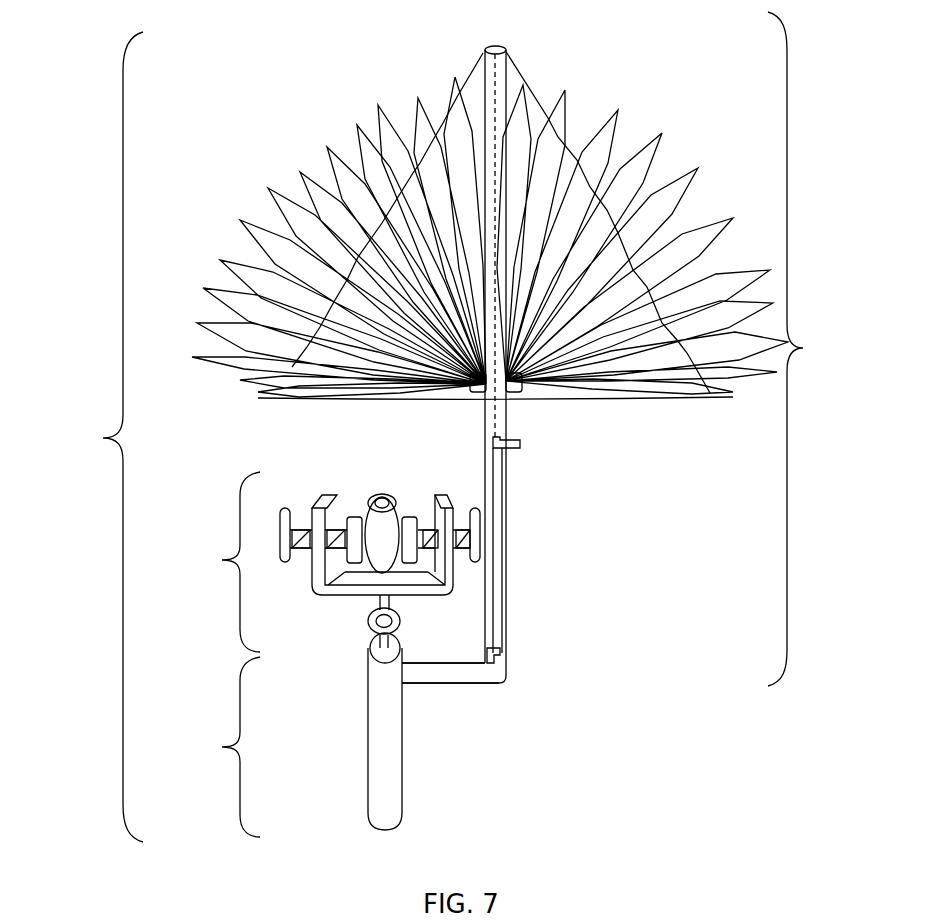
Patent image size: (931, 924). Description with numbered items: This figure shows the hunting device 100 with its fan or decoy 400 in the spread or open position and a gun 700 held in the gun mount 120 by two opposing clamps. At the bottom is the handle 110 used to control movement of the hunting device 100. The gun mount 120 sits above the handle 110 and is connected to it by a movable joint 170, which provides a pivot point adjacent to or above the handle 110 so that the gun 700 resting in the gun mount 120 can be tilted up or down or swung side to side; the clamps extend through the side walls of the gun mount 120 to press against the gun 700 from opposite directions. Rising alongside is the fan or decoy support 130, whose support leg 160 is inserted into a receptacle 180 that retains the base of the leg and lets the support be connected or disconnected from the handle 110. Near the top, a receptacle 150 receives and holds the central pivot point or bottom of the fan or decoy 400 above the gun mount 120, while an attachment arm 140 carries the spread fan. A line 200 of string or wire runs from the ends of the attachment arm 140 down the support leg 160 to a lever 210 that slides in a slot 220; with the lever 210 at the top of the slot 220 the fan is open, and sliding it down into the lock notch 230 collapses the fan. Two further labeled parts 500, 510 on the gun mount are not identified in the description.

The hunting device 100 is at (89, 437).
The handle 110 is at (285, 722).
The gun mount 120 is at (324, 545).
The fan or decoy support 130 is at (526, 349).
The attachment arm 140 is at (612, 400).
The receptacle 150 is at (475, 382).
The support leg 160 is at (508, 110).
The movable joint 170 is at (382, 634).
The receptacle 180 is at (452, 672).
The line 200 is at (328, 302).
The lever 210 is at (518, 444).
The slot 220 is at (503, 529).
The lock notch 230 is at (501, 657).
The fan or decoy 400 is at (355, 144).
The adjustment knob and shaft 500 is at (300, 548).
The roller 510 is at (352, 530).
The gun 700 is at (380, 525).